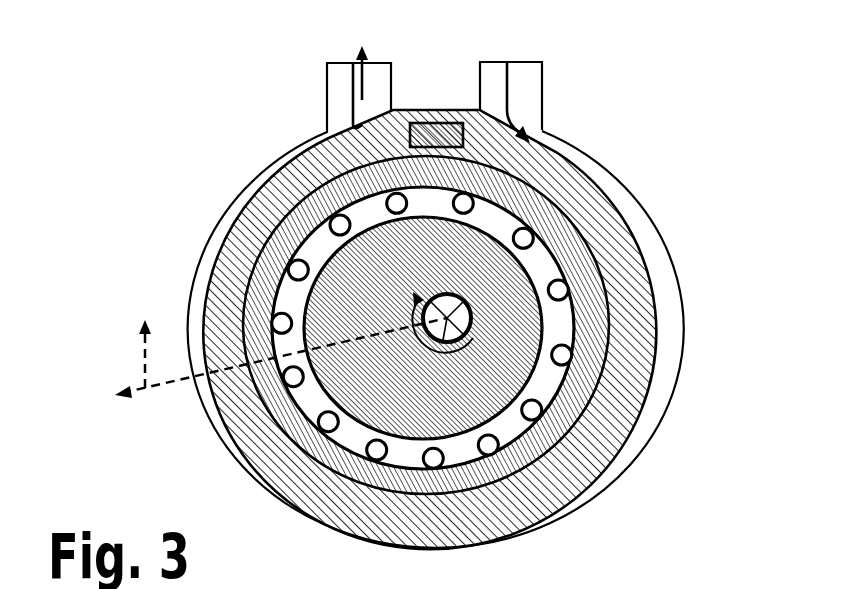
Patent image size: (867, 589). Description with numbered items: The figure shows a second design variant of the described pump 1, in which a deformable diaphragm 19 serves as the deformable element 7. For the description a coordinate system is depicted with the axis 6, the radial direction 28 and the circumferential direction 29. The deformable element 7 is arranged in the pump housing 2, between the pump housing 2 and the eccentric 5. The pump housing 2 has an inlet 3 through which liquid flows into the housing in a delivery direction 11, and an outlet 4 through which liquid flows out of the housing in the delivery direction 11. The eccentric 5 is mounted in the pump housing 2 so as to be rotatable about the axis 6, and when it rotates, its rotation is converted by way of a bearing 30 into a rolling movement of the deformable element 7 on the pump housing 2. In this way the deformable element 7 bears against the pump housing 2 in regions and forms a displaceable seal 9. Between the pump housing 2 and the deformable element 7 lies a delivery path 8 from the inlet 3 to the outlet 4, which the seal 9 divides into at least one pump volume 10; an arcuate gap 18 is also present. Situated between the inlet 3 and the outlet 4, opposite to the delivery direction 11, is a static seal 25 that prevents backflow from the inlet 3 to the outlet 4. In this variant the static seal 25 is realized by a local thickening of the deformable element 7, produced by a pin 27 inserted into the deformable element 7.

The pump 1 is at (192, 118).
The pump housing 2 is at (632, 188).
The inlet 3 is at (535, 52).
The outlet 4 is at (335, 58).
The eccentric 5 is at (612, 303).
The axis 6 is at (444, 343).
The deformable element 7 is at (585, 402).
The delivery path 8 is at (662, 343).
The displaceable seal 9 is at (300, 517).
The pump volume 10 is at (213, 245).
The delivery direction 11 is at (360, 93).
The arcuate gap 18 is at (545, 277).
The deformable diaphragm 19 is at (510, 507).
The static seal 25 is at (433, 108).
The pin 27 is at (452, 109).
The radial direction 28 is at (138, 386).
The circumferential direction 29 is at (145, 352).
The bearing 30 is at (534, 253).